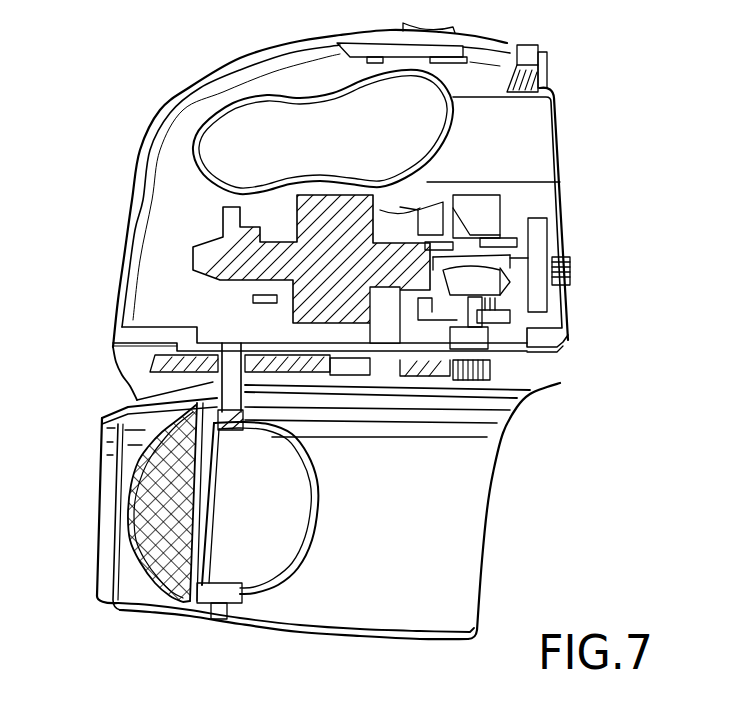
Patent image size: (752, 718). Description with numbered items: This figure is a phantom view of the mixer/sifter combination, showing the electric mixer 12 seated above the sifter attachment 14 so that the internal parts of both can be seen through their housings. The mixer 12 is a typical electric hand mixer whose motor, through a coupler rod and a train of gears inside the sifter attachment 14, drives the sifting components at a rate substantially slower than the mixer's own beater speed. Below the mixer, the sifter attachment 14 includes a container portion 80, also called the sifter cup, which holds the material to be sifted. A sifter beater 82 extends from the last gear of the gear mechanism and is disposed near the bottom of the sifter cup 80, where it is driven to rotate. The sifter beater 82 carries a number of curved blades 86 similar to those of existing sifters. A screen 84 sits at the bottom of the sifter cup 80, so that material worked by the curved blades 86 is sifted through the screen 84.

The electric mixer 12 is at (219, 51).
The sifter attachment 14 is at (378, 641).
The container portion 80 is at (128, 526).
The sifter beater 82 is at (147, 585).
The screen 84 is at (153, 488).
The curved blades 86 is at (287, 583).